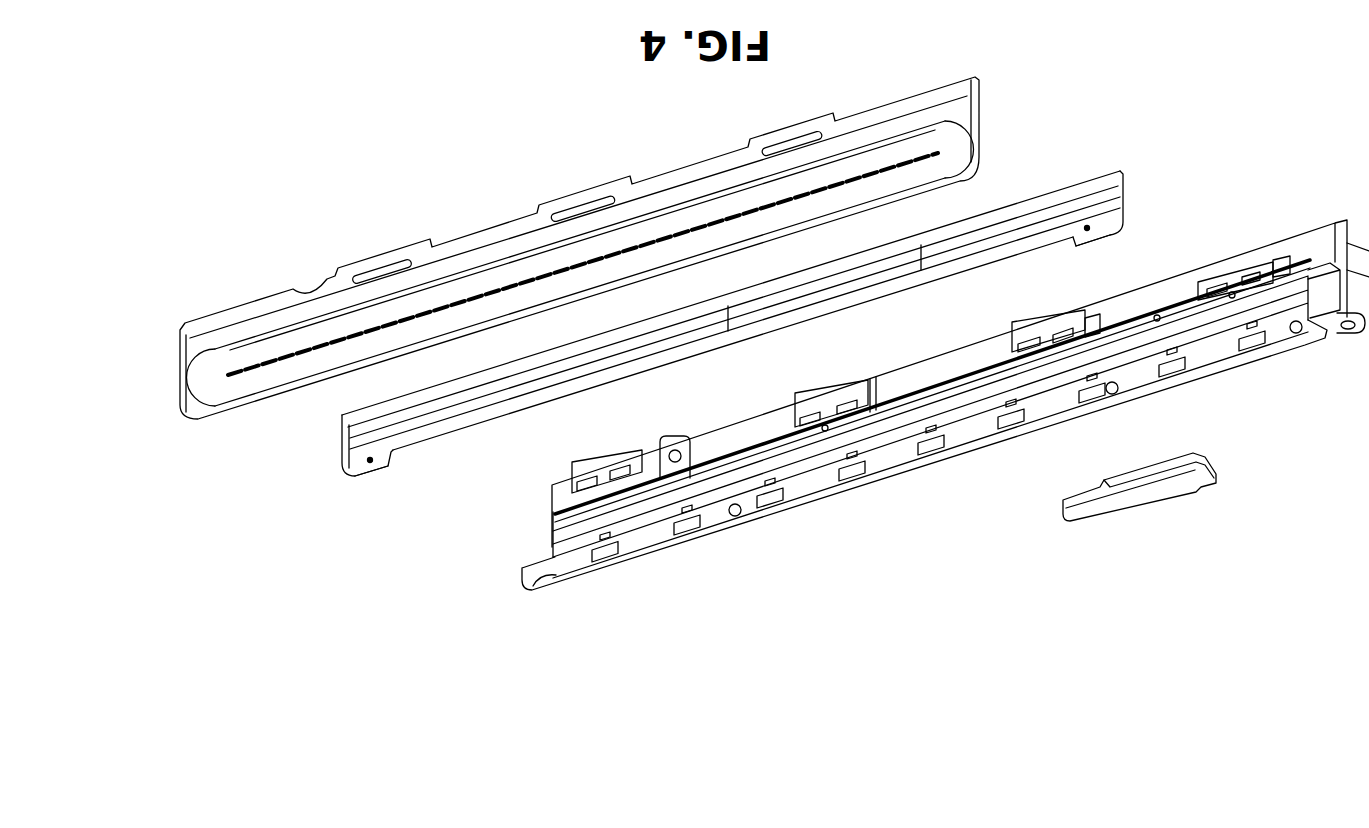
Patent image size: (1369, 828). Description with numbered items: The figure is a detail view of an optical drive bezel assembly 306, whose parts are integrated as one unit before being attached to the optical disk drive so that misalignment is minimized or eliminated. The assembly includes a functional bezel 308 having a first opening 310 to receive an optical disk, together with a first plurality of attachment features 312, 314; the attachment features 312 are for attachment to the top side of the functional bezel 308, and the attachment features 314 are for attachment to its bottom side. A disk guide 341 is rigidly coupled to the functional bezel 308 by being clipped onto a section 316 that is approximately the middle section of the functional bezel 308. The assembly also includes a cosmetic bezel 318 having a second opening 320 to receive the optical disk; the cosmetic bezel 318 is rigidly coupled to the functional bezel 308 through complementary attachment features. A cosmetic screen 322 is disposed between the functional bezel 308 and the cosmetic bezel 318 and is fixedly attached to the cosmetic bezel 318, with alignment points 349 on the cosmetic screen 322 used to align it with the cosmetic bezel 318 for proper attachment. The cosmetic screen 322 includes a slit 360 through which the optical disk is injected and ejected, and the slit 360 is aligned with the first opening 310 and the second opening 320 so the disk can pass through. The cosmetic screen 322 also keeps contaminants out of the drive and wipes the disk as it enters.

The optical drive bezel assembly 306 is at (905, 465).
The functional bezel 308 is at (600, 562).
The first opening 310 is at (570, 522).
The attachment features 312 is at (673, 543).
The attachment features 314 is at (567, 478).
The section 316 is at (905, 380).
The cosmetic bezel 318 is at (180, 420).
The second opening 320 is at (172, 342).
The cosmetic screen 322 is at (343, 465).
The disk guide 341 is at (1065, 527).
The alignment points 349 is at (369, 464).
The slit 360 is at (638, 353).